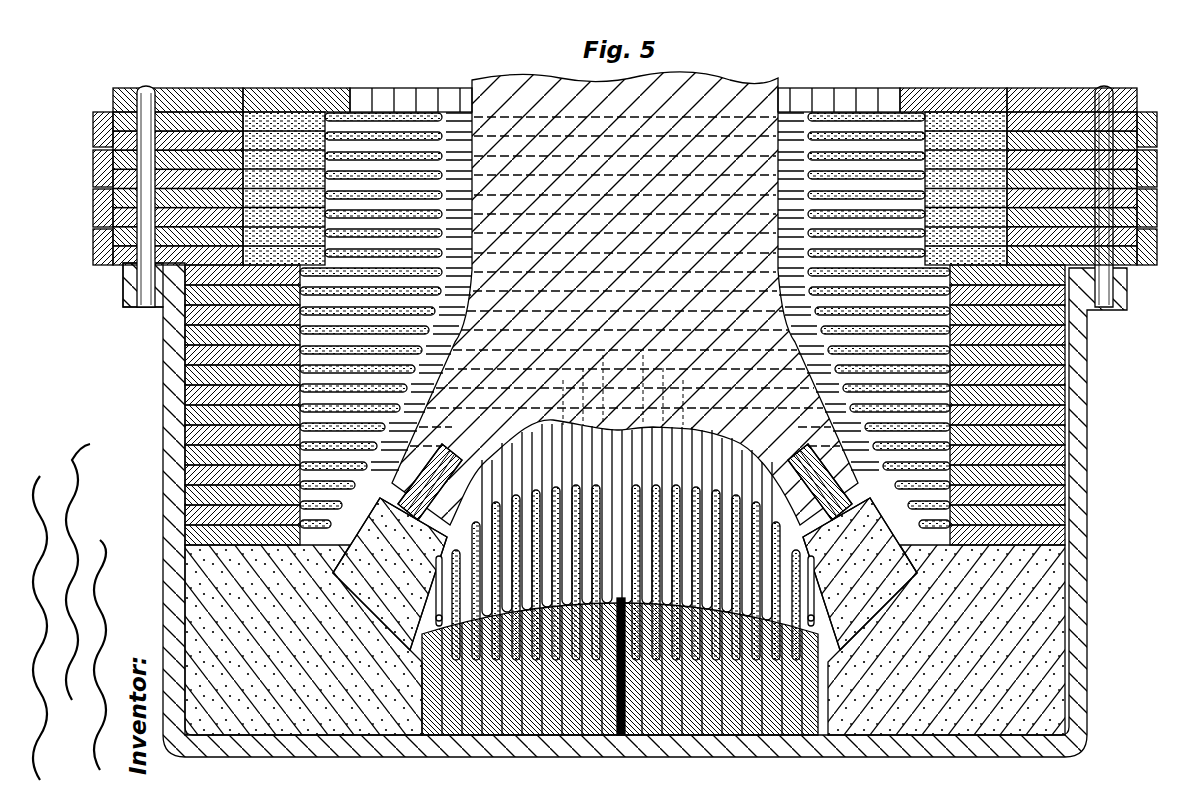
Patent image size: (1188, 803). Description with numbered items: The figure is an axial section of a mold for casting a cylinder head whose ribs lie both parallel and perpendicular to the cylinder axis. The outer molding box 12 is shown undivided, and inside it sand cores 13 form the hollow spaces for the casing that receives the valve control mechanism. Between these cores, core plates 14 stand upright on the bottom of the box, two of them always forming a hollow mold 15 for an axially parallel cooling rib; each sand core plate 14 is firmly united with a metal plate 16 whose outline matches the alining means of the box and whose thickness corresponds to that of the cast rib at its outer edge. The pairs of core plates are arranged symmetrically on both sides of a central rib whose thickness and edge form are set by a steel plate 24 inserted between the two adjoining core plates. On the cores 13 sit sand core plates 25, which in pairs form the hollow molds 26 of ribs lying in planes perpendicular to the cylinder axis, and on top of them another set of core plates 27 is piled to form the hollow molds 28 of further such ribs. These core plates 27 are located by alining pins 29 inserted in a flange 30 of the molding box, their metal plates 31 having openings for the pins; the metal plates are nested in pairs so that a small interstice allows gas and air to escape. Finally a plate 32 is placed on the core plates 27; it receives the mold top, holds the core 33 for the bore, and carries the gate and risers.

The molding box 12 is at (176, 517).
The sand cores 13 is at (250, 612).
The core plates 14 is at (440, 627).
The hollow molds 15 is at (465, 597).
The metal plate 16 is at (460, 735).
The steel plate 24 is at (620, 737).
The sand core plates 25 is at (335, 503).
The hollow molds 26 is at (364, 515).
The core plates 27 is at (402, 187).
The hollow molds 28 is at (876, 175).
The alining pins 29 is at (139, 308).
The flange 30 is at (132, 289).
The metal plate 31 is at (197, 113).
The plate 32 is at (288, 102).
The core 33 is at (762, 88).